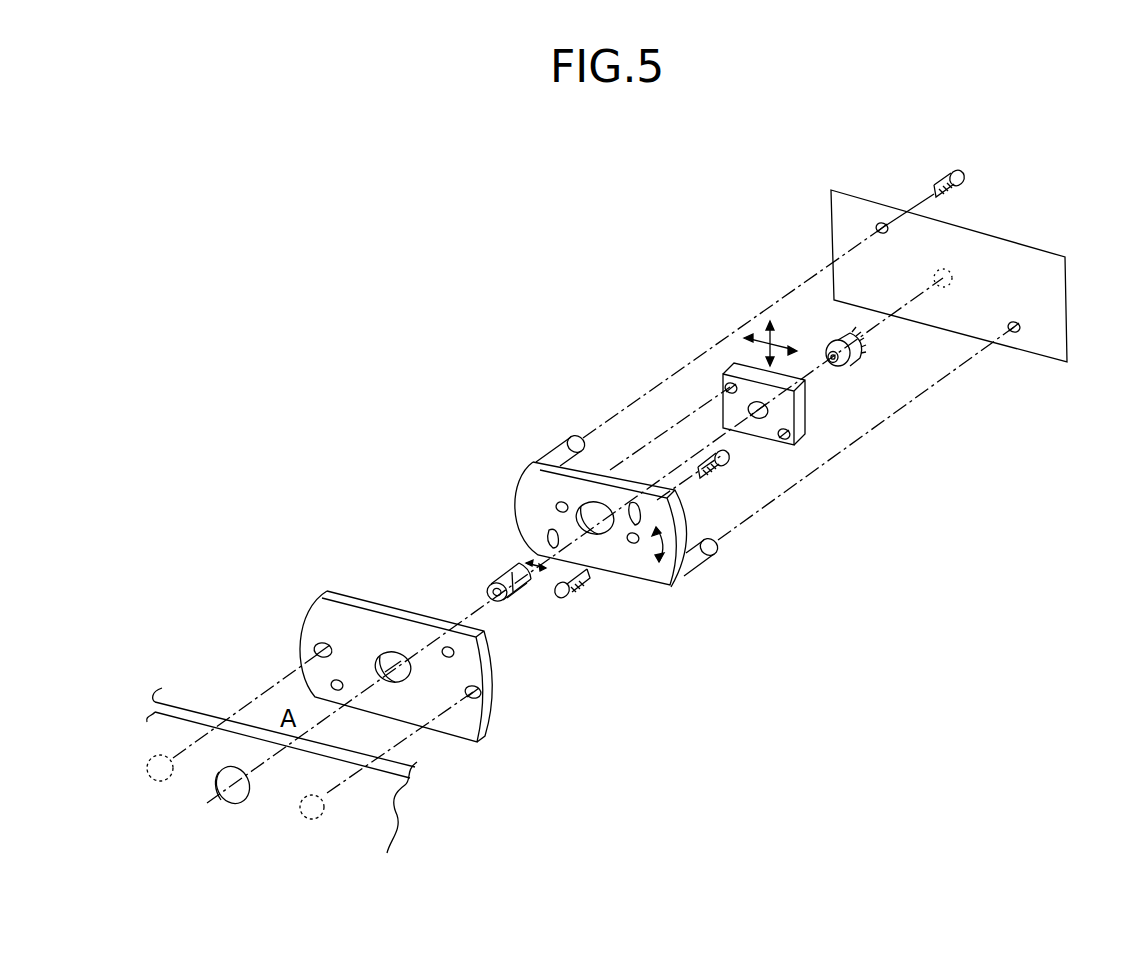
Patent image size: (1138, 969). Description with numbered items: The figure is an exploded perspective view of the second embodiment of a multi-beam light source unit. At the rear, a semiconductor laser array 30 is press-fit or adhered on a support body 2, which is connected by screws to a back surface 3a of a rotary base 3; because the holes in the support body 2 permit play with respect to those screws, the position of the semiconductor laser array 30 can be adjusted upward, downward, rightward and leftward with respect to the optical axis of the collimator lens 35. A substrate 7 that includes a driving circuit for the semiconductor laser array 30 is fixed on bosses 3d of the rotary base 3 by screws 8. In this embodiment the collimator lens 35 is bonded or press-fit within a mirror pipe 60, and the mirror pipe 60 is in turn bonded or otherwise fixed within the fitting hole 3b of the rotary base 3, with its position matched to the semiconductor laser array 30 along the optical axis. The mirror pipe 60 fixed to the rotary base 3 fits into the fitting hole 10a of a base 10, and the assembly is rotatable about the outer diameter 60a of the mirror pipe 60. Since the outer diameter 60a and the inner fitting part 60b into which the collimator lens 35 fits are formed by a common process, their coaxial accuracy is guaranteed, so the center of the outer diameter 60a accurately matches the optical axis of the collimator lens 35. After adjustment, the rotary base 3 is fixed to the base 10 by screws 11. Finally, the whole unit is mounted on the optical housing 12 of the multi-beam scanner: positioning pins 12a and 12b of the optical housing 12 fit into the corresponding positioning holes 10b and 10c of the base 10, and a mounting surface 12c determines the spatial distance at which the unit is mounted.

The support body 2 is at (802, 440).
The rotary base 3 is at (660, 575).
The back surface 3a is at (628, 477).
The fitting hole 3b is at (610, 532).
The bosses 3d is at (703, 556).
The substrate 7 is at (990, 246).
The screws 8 is at (953, 172).
The base 10 is at (500, 703).
The fitting hole 10a is at (387, 652).
The positioning hole 10b is at (473, 700).
The positioning hole 10c is at (312, 640).
The screws 11 is at (731, 462).
The optical housing 12 is at (413, 823).
The positioning pin 12a is at (322, 812).
The positioning pin 12b is at (172, 775).
The mounting surface 12c is at (262, 716).
The semiconductor laser array 30 is at (860, 356).
The collimator lens 35 is at (520, 598).
The mirror pipe 60 is at (492, 588).
The outer diameter 60a is at (525, 560).
The inner fitting part 60b is at (508, 600).